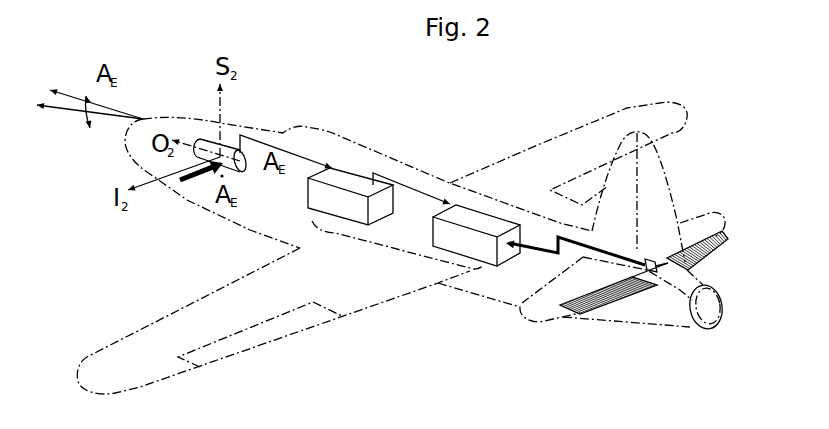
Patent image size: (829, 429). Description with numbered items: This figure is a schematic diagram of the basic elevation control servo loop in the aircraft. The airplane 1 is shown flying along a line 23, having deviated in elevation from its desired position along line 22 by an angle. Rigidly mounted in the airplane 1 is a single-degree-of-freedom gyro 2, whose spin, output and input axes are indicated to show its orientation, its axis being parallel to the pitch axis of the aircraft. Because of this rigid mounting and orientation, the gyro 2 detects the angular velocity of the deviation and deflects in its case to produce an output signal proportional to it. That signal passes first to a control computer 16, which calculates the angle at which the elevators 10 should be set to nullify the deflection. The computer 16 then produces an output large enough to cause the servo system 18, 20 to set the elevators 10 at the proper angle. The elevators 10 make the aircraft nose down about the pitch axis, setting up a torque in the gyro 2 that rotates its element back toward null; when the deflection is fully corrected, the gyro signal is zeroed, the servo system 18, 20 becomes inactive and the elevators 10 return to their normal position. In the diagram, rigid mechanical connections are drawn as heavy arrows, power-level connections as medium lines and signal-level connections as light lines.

The airplane 1 is at (453, 292).
The single-degree-of-freedom gyro 2 is at (248, 167).
The elevators 10 is at (610, 297).
The control computer 16 is at (345, 180).
The servo system 18 is at (470, 213).
The servo system 20 is at (587, 254).
The line of desired position 22 is at (88, 117).
The line of flight 23 is at (93, 94).